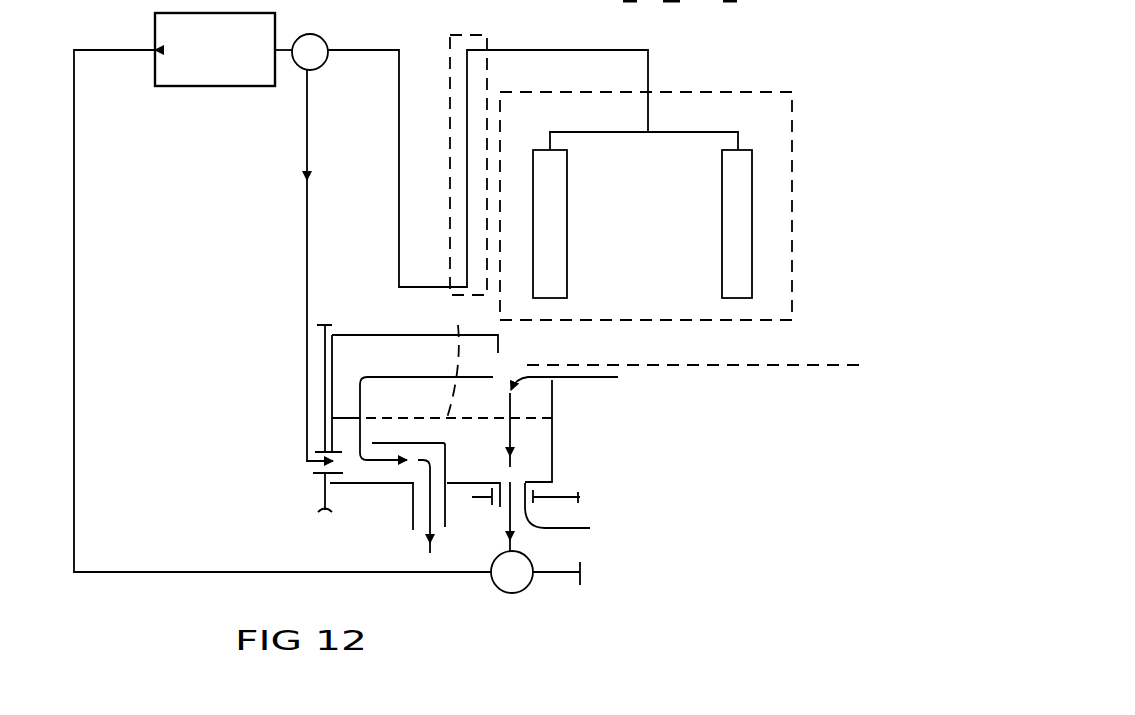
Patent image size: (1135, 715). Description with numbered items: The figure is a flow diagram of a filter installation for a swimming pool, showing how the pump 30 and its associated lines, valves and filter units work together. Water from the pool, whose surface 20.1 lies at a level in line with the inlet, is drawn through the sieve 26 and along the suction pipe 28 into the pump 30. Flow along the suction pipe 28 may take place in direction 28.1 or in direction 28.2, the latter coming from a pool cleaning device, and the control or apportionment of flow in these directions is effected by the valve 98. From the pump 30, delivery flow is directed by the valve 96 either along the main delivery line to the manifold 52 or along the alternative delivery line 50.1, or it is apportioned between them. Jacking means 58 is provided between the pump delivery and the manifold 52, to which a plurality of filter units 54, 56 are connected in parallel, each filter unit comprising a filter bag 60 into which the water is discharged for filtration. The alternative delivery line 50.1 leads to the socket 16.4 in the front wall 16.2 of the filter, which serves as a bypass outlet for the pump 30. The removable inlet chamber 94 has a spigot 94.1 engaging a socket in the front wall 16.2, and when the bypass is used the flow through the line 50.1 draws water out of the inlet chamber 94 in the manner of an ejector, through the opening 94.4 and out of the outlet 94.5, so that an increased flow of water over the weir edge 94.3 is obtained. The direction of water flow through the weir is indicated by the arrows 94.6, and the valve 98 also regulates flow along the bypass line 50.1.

The suction pipe 28 is at (80, 343).
The pump 30 is at (232, 70).
The valve 96 is at (325, 65).
The alternative delivery line 50.1 is at (307, 226).
The filter bag 60 is at (508, 50).
The jacking means 58 is at (487, 112).
The manifold 52 is at (683, 132).
The filter unit 54 is at (533, 193).
The filter unit 56 is at (752, 202).
The water surface 20.1 is at (797, 365).
The sieve 26 is at (458, 325).
The socket 16.4 is at (317, 481).
The front wall 16.2 is at (322, 495).
The inlet chamber 94 is at (552, 449).
The opening 94.4 is at (368, 437).
The weir edge 94.3 is at (558, 388).
The spigot 94.1 is at (587, 514).
The arrows 94.6 is at (382, 460).
The outlet 94.5 is at (416, 535).
The flow direction 28.1 is at (510, 508).
The flow direction 28.2 is at (562, 577).
The valve 98 is at (526, 588).